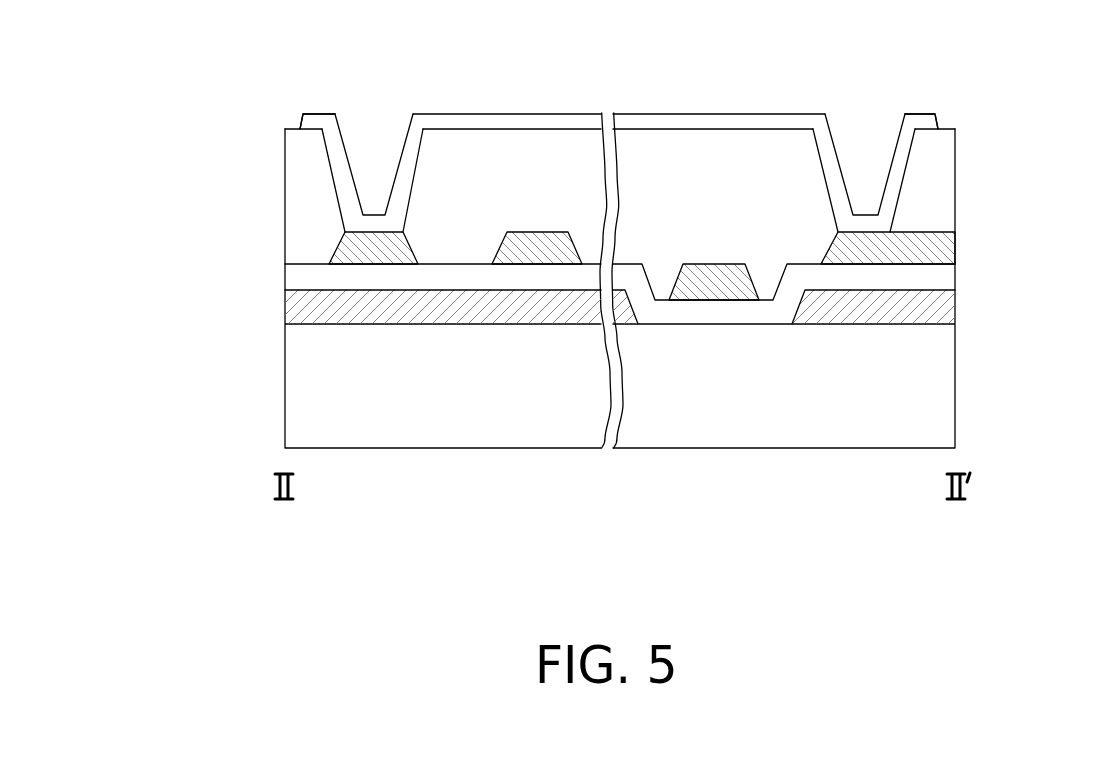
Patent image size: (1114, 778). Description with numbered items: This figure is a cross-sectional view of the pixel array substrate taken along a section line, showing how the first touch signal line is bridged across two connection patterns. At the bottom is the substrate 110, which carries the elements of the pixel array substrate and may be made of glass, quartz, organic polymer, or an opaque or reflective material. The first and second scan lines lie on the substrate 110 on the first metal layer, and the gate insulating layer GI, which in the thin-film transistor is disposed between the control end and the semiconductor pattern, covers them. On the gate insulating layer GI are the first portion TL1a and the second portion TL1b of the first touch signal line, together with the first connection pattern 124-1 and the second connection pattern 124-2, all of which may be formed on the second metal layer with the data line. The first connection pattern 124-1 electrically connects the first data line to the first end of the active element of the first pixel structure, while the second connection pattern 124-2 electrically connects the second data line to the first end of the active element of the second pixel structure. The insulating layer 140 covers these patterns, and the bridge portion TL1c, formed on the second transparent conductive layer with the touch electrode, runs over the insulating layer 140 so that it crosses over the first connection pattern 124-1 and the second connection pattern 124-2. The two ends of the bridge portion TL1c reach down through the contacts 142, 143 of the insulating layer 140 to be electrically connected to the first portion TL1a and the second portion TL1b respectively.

The substrate 110 is at (312, 405).
The gate insulating layer GI is at (312, 279).
The first portion of the first touch signal line TL1a is at (350, 256).
The second portion of the first touch signal line TL1b is at (927, 250).
The bridge portion of the first touch signal line TL1c is at (923, 121).
The first connection pattern 124-1 is at (540, 248).
The second connection pattern 124-2 is at (720, 288).
The insulating layer 140 is at (933, 185).
The contact 142 is at (337, 177).
The contact 143 is at (828, 180).